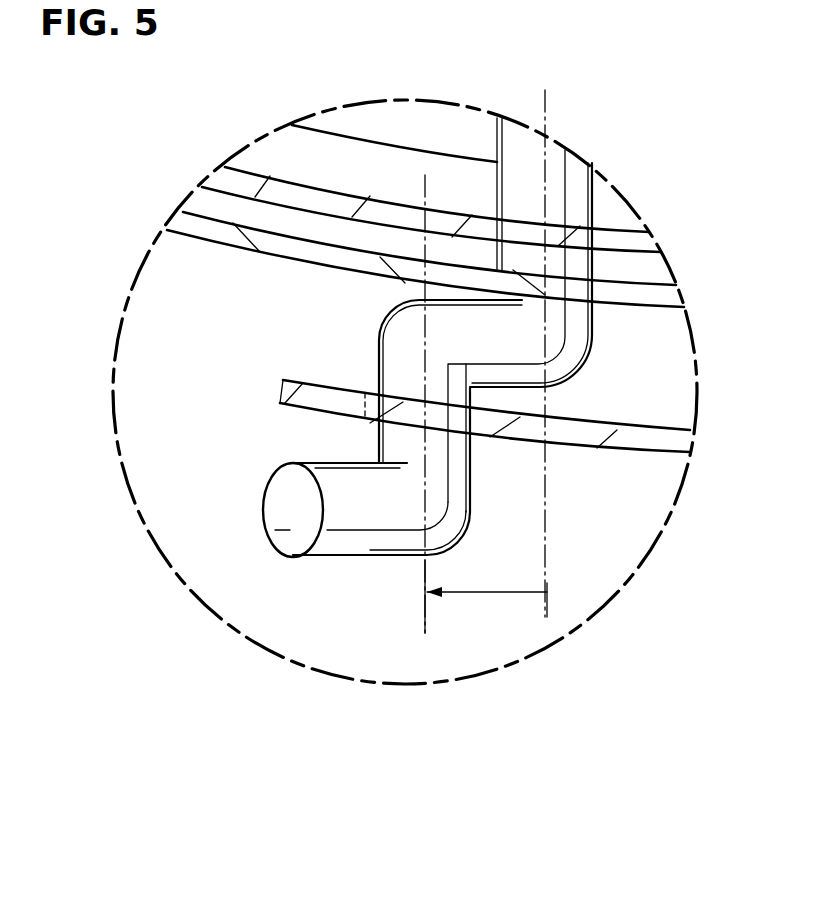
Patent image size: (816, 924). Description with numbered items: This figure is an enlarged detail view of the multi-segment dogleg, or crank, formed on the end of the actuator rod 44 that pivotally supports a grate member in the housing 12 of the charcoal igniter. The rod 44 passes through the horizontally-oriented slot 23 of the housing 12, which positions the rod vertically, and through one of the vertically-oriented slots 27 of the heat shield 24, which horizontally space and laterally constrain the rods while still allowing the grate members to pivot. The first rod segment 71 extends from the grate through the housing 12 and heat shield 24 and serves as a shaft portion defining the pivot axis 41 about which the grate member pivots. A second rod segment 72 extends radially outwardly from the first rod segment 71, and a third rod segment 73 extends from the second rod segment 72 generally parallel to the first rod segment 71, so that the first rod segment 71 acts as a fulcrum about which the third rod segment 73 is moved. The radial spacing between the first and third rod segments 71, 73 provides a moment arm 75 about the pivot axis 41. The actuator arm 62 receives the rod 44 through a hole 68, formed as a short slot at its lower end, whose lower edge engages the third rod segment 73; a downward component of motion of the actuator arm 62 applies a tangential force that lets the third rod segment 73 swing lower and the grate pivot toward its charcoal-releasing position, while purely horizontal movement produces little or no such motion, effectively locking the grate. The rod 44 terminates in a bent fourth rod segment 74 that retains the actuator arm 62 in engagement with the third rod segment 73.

The housing 12 is at (313, 187).
The heat shield 24 is at (247, 227).
The slots 27 is at (603, 293).
The first rod segment 71 is at (493, 177).
The slot 23 is at (487, 243).
The pivot axis 41 is at (543, 157).
The third rod segment 73 is at (378, 365).
The hole 68 is at (365, 417).
The actuator arm 62 is at (650, 430).
The second rod segment 72 is at (517, 387).
The rod 44 is at (272, 535).
The fourth rod segment 74 is at (325, 557).
The moment arm 75 is at (490, 593).